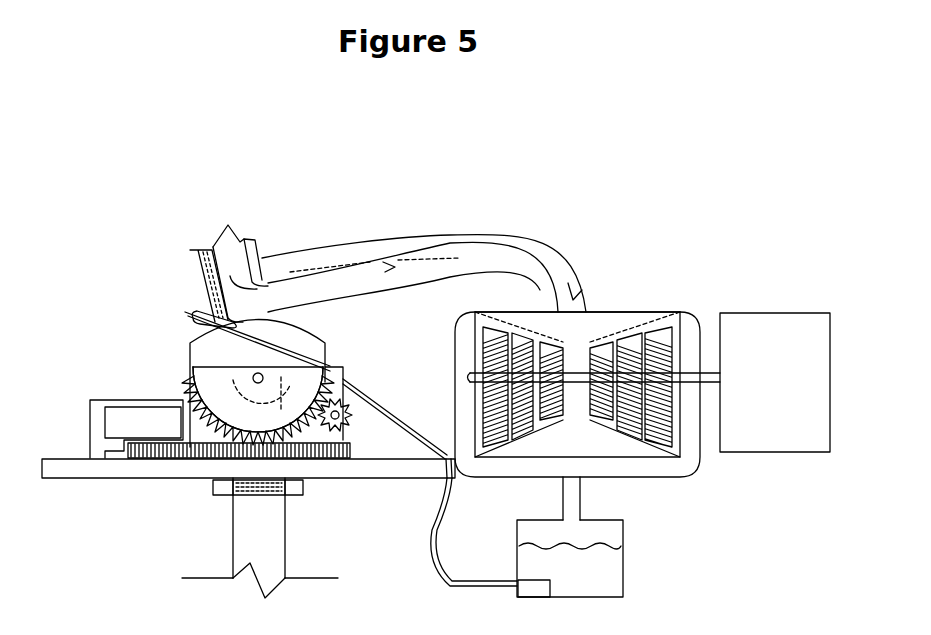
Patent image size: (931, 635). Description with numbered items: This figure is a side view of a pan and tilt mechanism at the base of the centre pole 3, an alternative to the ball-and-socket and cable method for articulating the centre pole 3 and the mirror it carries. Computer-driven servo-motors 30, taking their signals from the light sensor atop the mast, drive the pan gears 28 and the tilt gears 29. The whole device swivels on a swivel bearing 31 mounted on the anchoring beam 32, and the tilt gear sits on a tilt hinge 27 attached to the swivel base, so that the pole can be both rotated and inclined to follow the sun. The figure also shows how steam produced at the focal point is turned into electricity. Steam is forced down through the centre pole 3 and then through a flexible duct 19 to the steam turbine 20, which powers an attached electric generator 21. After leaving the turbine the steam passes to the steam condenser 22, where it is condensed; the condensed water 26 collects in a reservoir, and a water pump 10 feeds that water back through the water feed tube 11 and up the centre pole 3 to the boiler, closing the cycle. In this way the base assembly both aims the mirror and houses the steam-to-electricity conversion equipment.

The centre pole 3 is at (238, 238).
The water pump 10 is at (517, 582).
The water feed tube 11 is at (190, 313).
The flexible duct 19 is at (427, 252).
The steam turbine 20 is at (635, 312).
The electric generator 21 is at (777, 352).
The steam condenser 22 is at (667, 467).
The condensed water 26 is at (600, 563).
The tilt hinge 27 is at (313, 340).
The pan gears 28 is at (348, 445).
The tilt gears 29 is at (197, 403).
The servo-motor with gear transmission 30 is at (112, 417).
The swivel bearing 31 is at (303, 494).
The anchoring beam 32 is at (233, 527).